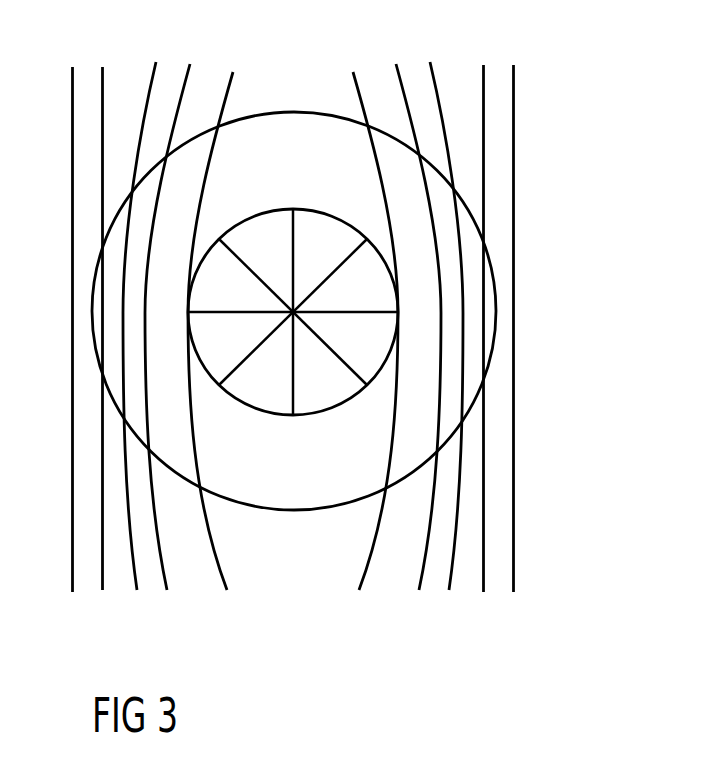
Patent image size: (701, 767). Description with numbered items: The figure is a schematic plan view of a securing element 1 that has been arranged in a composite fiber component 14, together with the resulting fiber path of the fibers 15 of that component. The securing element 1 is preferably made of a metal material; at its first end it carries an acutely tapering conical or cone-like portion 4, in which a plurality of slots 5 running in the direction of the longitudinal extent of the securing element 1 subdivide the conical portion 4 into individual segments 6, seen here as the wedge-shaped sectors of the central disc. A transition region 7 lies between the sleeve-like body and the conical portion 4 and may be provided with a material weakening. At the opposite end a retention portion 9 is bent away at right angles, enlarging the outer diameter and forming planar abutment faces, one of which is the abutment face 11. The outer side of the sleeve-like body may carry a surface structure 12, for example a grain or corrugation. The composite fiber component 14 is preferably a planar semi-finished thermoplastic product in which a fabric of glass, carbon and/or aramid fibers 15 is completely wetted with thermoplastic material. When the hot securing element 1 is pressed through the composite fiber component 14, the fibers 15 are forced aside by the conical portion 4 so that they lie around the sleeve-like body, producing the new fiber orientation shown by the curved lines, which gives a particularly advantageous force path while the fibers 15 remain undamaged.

The securing element 1 is at (288, 130).
The conical or cone-like portion 4 is at (248, 390).
The slots 5 is at (347, 367).
The segments 6 is at (293, 312).
The transition region 7 is at (330, 212).
The retention portion 9 is at (418, 237).
The abutment face 11 is at (447, 390).
The surface structure 12 is at (204, 257).
The composite fiber component 14 is at (496, 497).
The fibers 15 is at (485, 125).